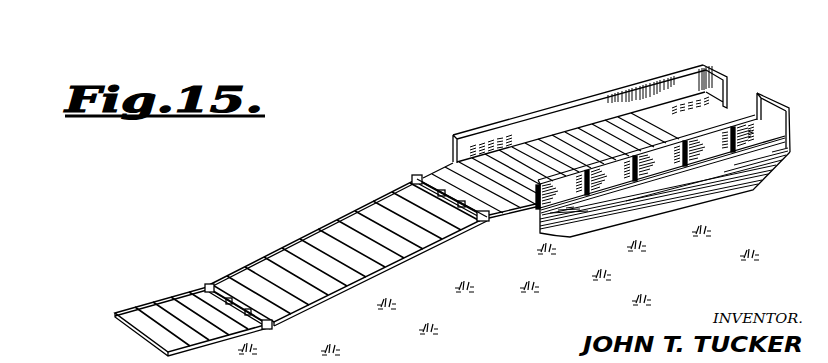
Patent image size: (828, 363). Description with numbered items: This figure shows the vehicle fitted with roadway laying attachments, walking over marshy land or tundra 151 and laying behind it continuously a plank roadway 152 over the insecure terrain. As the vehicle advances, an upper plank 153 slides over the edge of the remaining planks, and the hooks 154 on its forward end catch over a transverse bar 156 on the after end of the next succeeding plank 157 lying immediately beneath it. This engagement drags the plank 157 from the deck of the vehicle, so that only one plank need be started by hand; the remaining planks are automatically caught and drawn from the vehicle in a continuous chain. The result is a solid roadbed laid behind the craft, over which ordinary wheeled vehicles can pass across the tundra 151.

The marshy land or tundra 151 is at (681, 277).
The plank roadway 152 is at (147, 298).
The upper plank 153 is at (281, 262).
The hooks 154 is at (416, 178).
The transverse bar 156 is at (497, 215).
The next succeeding plank 157 is at (527, 153).